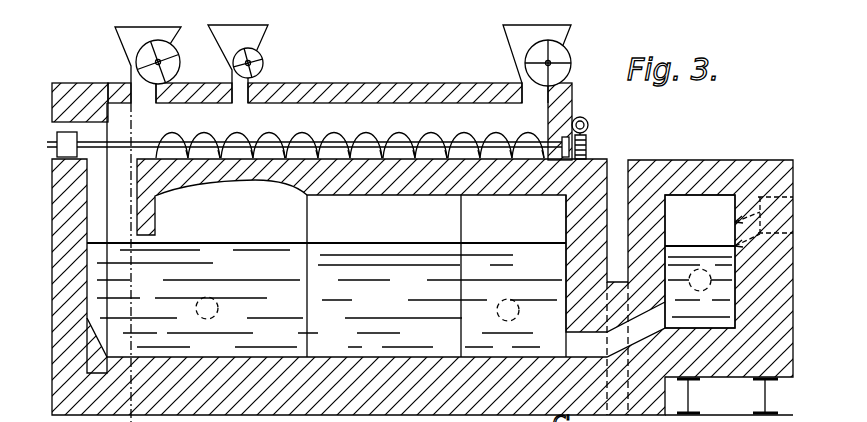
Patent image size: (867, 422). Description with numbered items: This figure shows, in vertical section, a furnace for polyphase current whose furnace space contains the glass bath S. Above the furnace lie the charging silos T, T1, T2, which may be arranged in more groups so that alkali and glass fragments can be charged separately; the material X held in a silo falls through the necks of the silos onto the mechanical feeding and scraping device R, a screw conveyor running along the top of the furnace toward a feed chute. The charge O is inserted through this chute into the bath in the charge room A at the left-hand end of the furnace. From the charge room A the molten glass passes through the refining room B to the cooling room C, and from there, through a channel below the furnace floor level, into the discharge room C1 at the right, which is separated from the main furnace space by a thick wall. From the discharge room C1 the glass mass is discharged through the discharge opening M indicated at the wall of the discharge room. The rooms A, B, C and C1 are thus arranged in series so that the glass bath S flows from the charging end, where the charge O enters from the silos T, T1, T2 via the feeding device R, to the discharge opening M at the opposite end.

The charging silo T2 is at (120, 40).
The charging silo T1 is at (258, 42).
The charging silo T is at (509, 27).
The mechanical feeding and scraping device R is at (338, 139).
The charge O is at (116, 185).
The material X is at (122, 43).
The charge room A is at (251, 276).
The refining room B is at (415, 276).
The cooling room C is at (531, 276).
The glass bath S is at (326, 295).
The discharge room C1 is at (700, 261).
The discharge opening M is at (783, 222).